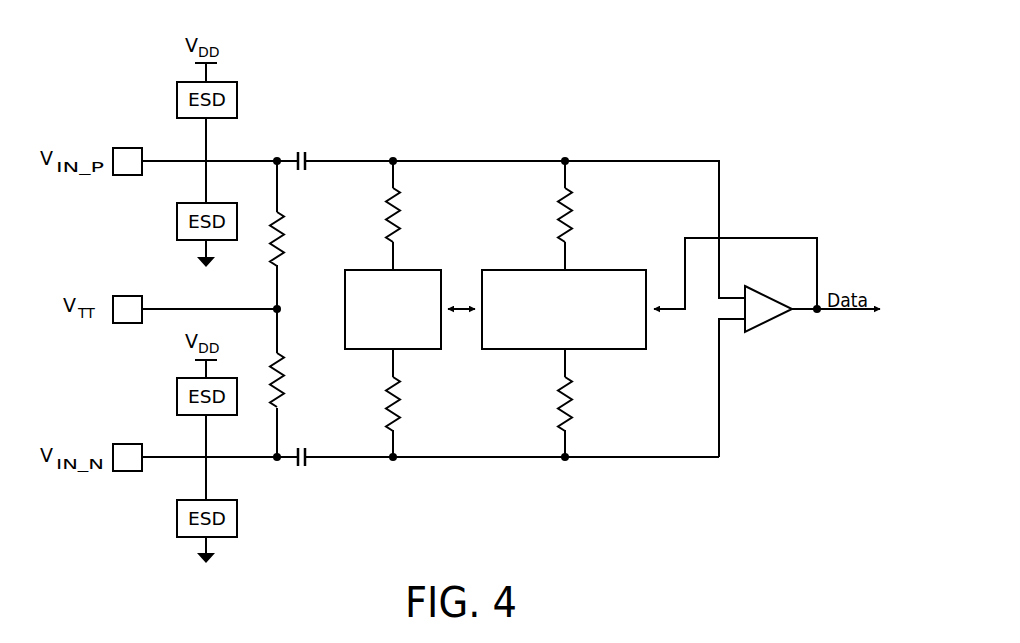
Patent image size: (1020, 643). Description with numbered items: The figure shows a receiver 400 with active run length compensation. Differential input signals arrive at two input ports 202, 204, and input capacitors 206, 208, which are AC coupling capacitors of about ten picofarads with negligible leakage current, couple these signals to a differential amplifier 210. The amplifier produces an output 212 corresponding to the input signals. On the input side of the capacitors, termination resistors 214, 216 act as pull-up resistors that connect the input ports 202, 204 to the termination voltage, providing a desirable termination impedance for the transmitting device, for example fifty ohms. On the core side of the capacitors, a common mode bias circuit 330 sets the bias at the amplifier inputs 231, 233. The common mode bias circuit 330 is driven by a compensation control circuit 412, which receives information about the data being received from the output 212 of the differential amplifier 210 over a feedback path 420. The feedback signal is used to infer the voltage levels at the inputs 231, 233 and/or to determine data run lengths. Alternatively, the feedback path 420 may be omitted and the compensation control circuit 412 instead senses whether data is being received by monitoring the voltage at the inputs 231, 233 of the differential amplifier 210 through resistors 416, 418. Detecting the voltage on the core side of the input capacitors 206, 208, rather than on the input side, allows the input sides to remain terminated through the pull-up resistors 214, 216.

The input port 202 is at (125, 148).
The input port 204 is at (127, 474).
The input capacitor 206 is at (307, 152).
The input capacitor 208 is at (308, 463).
The termination resistor 214 is at (286, 237).
The termination resistor 216 is at (286, 396).
The common mode bias circuit 330 is at (428, 268).
The compensation control circuit 412 is at (613, 255).
The resistor 416 is at (574, 217).
The resistor 418 is at (574, 402).
The feedback path 420 is at (771, 236).
The input of the differential amplifier 233 is at (737, 295).
The input of the differential amplifier 231 is at (738, 325).
The differential amplifier 210 is at (777, 295).
The output 212 is at (805, 312).
The receiver 400 is at (775, 120).